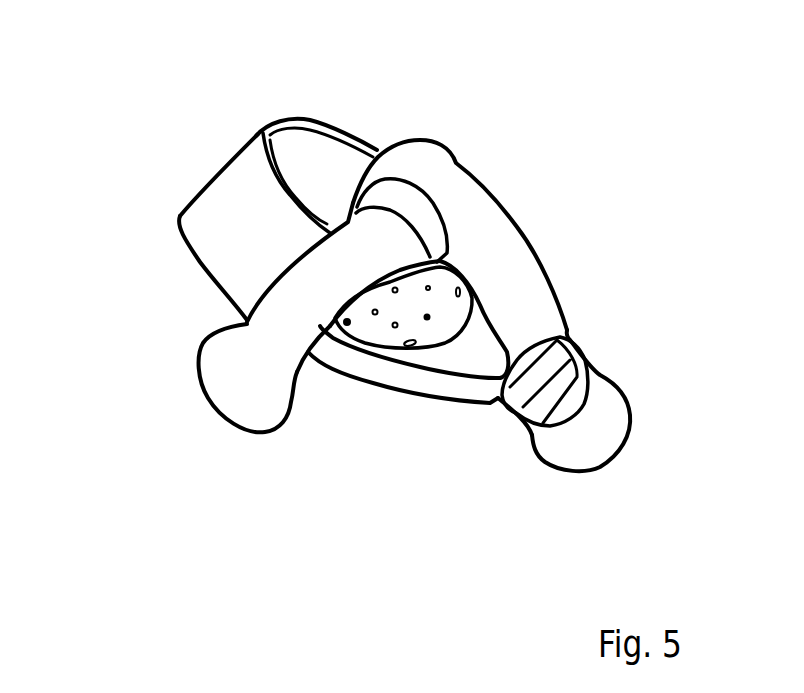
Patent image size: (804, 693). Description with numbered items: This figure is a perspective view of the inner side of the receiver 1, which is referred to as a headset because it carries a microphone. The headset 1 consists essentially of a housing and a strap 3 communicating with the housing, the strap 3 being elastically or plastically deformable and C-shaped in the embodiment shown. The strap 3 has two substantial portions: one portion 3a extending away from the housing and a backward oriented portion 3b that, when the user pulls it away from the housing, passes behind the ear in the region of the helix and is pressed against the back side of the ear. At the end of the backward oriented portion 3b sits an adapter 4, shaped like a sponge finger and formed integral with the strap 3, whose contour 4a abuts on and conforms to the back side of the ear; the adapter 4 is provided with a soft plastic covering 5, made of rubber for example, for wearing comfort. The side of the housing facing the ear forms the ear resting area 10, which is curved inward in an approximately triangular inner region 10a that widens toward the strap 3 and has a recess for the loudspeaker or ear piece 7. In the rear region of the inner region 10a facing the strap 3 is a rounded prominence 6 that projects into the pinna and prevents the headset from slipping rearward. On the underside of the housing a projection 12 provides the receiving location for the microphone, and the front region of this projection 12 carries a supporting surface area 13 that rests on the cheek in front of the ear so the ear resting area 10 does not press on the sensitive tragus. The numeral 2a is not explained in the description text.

The receiver 1 is at (624, 163).
The strap 3 is at (217, 150).
The strap portion extending away from the housing 3a is at (313, 131).
The backward oriented strap portion 3b is at (207, 250).
The adapter 4 is at (172, 393).
The contour 4a is at (298, 382).
The soft plastic covering 5 is at (227, 390).
The prominence 6 is at (358, 300).
The loudspeaker 7 is at (392, 333).
The ear resting area 10 is at (445, 425).
The inner region 10a is at (480, 340).
The projection 12 is at (621, 360).
The supporting surface area 13 is at (563, 440).
The strap portion 2a is at (500, 417).